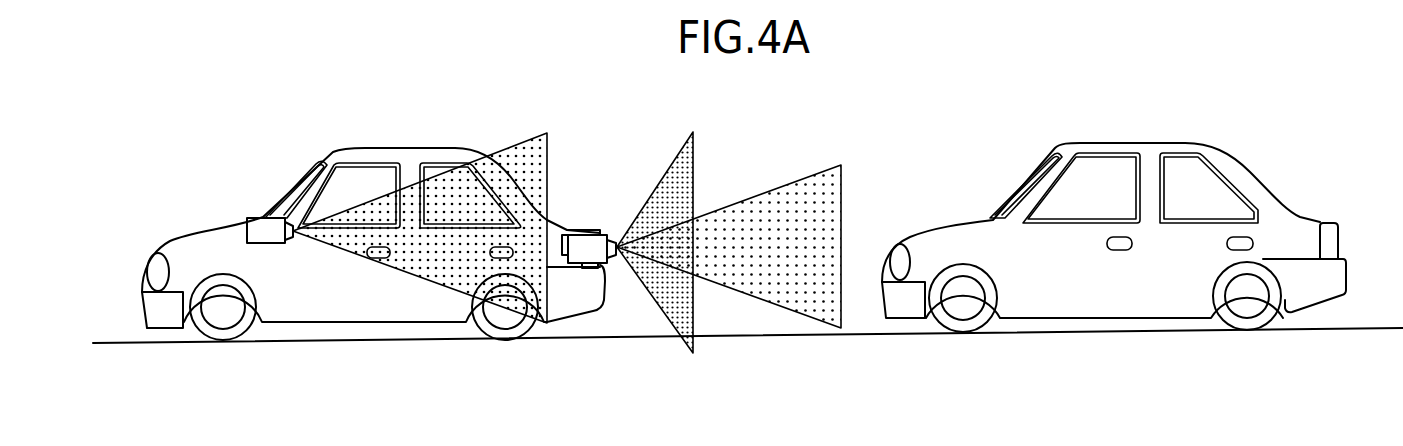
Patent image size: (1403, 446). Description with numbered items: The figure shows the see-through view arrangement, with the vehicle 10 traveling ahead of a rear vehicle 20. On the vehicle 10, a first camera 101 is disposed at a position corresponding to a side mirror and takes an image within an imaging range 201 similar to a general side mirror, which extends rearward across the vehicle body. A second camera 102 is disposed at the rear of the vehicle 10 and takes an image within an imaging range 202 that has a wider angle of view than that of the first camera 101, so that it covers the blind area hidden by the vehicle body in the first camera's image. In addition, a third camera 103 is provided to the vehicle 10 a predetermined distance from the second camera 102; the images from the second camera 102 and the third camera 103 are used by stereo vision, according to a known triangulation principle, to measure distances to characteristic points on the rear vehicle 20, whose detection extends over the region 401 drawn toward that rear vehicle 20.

The vehicle 10 is at (363, 150).
The rear vehicle 20 is at (1145, 140).
The first camera 101 is at (258, 217).
The second camera 102 is at (588, 233).
The third camera 103 is at (592, 269).
The imaging range 201 is at (513, 146).
The imaging range 202 is at (694, 140).
The detection range 401 is at (820, 173).